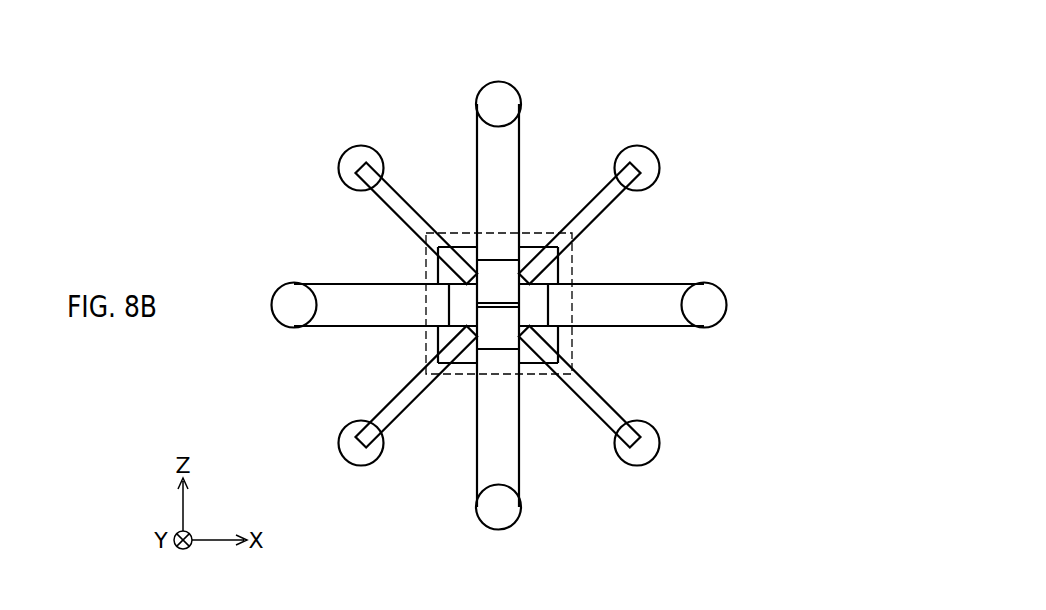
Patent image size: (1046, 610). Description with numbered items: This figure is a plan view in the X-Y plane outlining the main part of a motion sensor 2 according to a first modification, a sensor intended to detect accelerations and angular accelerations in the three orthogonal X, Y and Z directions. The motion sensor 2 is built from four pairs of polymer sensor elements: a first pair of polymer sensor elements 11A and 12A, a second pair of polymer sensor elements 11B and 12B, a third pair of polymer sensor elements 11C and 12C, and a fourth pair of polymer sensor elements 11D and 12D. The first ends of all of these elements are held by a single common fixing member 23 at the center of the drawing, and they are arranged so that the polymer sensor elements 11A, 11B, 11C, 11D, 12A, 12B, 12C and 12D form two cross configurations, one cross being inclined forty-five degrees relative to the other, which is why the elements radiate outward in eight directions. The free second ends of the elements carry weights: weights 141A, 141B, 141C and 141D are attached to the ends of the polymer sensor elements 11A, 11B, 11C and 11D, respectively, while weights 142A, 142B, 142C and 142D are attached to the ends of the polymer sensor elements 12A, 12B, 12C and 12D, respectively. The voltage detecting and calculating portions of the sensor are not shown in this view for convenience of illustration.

The motion sensor 2 is at (734, 142).
The common fixing member 23 is at (453, 373).
The polymer sensor element 11A is at (328, 290).
The polymer sensor element 11B is at (513, 460).
The polymer sensor element 11C is at (383, 418).
The polymer sensor element 11D is at (403, 210).
The polymer sensor element 12A is at (660, 290).
The polymer sensor element 12B is at (518, 142).
The polymer sensor element 12C is at (592, 210).
The polymer sensor element 12D is at (615, 413).
The weight 141A is at (288, 308).
The weight 141B is at (500, 517).
The weight 141C is at (362, 457).
The weight 141D is at (366, 158).
The weight 142A is at (713, 300).
The weight 142B is at (500, 92).
The weight 142C is at (643, 153).
The weight 142D is at (642, 455).